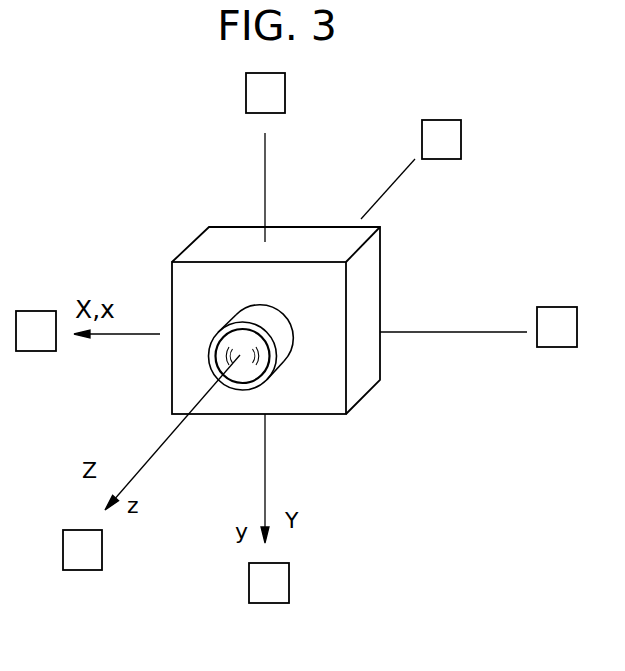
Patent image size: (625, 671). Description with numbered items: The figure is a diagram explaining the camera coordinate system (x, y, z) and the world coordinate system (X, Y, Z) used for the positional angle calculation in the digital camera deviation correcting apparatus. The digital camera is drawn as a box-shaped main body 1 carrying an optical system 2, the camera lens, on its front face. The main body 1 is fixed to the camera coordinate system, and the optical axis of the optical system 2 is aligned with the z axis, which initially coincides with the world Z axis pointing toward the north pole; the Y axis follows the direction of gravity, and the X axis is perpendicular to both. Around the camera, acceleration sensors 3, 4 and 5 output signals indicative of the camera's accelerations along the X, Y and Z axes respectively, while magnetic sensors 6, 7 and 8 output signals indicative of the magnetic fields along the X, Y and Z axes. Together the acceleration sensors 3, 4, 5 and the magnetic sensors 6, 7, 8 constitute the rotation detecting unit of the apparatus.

The main body 1 is at (305, 240).
The optical system 2 is at (280, 350).
The acceleration sensor 3 is at (38, 344).
The acceleration sensor 4 is at (270, 597).
The acceleration sensor 5 is at (84, 565).
The magnetic sensor 6 is at (557, 315).
The magnetic sensor 7 is at (285, 95).
The magnetic sensor 8 is at (450, 140).